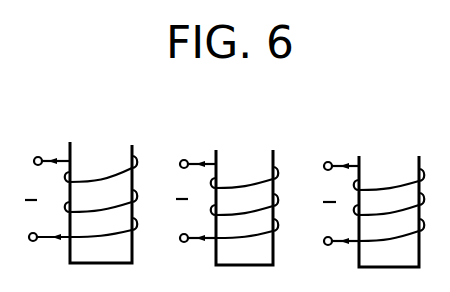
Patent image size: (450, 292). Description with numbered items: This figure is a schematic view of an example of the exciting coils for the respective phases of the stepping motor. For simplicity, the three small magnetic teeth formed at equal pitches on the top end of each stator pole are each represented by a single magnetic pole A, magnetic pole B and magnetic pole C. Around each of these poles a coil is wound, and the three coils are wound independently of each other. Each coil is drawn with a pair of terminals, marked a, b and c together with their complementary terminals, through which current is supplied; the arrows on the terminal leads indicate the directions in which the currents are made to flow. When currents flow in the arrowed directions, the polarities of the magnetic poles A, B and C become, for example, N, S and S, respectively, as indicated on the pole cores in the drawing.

The magnetic pole A is at (81, 192).
The magnetic pole B is at (227, 193).
The magnetic pole C is at (373, 195).
The terminal a of coil A a is at (47, 146).
The terminal b of coil B b is at (197, 153).
The terminal c of coil C c is at (341, 152).